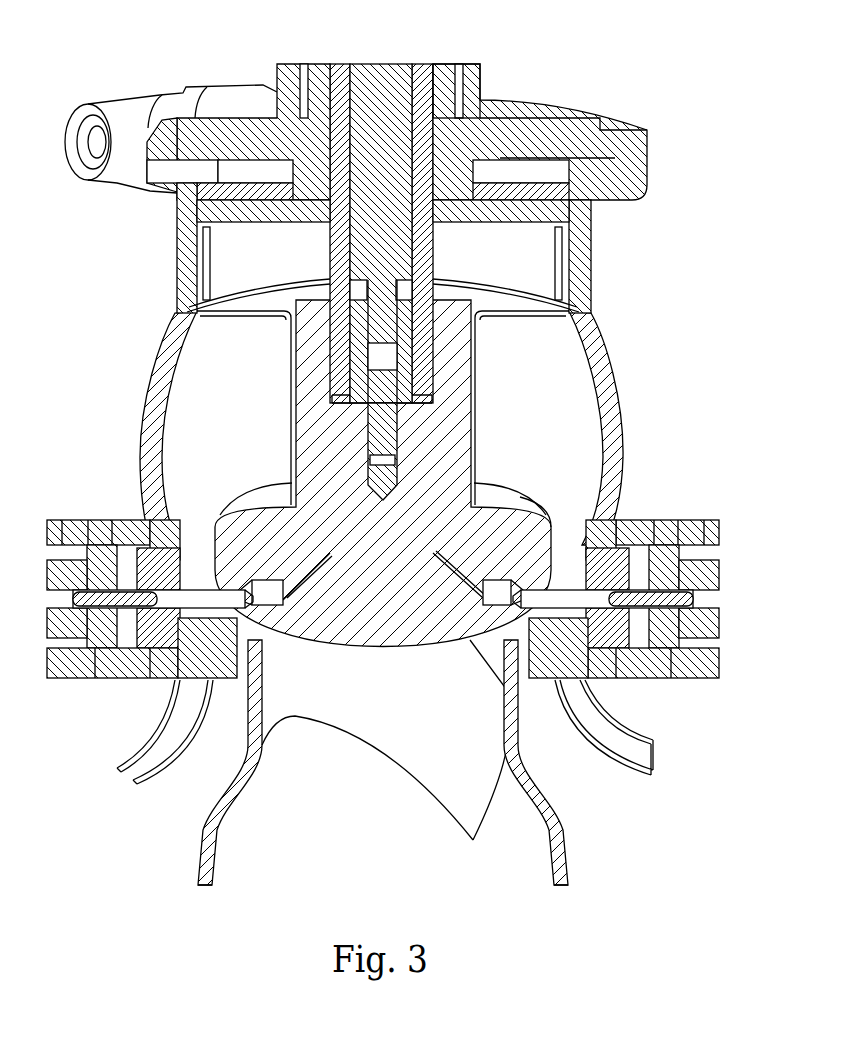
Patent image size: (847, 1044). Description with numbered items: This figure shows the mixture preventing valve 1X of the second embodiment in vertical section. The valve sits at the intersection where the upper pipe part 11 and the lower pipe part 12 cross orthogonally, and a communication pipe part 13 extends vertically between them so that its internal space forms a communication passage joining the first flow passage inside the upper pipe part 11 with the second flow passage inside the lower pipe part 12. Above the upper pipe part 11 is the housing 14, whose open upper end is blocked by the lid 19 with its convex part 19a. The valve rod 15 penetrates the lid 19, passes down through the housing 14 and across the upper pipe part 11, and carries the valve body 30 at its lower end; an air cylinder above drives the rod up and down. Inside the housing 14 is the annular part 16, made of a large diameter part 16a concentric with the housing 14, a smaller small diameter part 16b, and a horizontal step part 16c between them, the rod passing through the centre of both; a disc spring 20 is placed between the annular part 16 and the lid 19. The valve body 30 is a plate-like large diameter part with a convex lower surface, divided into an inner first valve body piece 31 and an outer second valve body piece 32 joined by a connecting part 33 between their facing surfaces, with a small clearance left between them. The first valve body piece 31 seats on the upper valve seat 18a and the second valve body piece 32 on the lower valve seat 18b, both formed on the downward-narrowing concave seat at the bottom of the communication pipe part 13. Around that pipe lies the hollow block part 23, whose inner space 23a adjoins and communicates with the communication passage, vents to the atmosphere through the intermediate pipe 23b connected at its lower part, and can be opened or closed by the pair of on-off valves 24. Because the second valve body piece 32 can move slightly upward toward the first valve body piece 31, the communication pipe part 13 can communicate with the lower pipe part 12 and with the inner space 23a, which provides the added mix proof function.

The mixture preventing valve 1X is at (672, 118).
The upper pipe part 11 is at (717, 282).
The lower pipe part 12 is at (560, 845).
The communication pipe part 13 is at (513, 753).
The housing 14 is at (170, 275).
The valve rod 15 is at (383, 90).
The annular part 16 is at (280, 348).
The large diameter part 16a is at (590, 295).
The small diameter part 16b is at (293, 178).
The step part 16c is at (560, 210).
The upper valve seat 18a is at (235, 585).
The lower valve seat 18b is at (292, 650).
The lid 19 is at (540, 130).
The convex part 19a is at (575, 185).
The disc spring 20 is at (495, 185).
The hollow block part 23 is at (660, 678).
The inner space 23a is at (165, 680).
The intermediate pipe 23b is at (125, 780).
The on-off valve 24 is at (65, 625).
The valve body 30 is at (280, 432).
The first valve body piece 31 is at (525, 510).
The second valve body piece 32 is at (500, 705).
The connecting part 33 is at (532, 650).